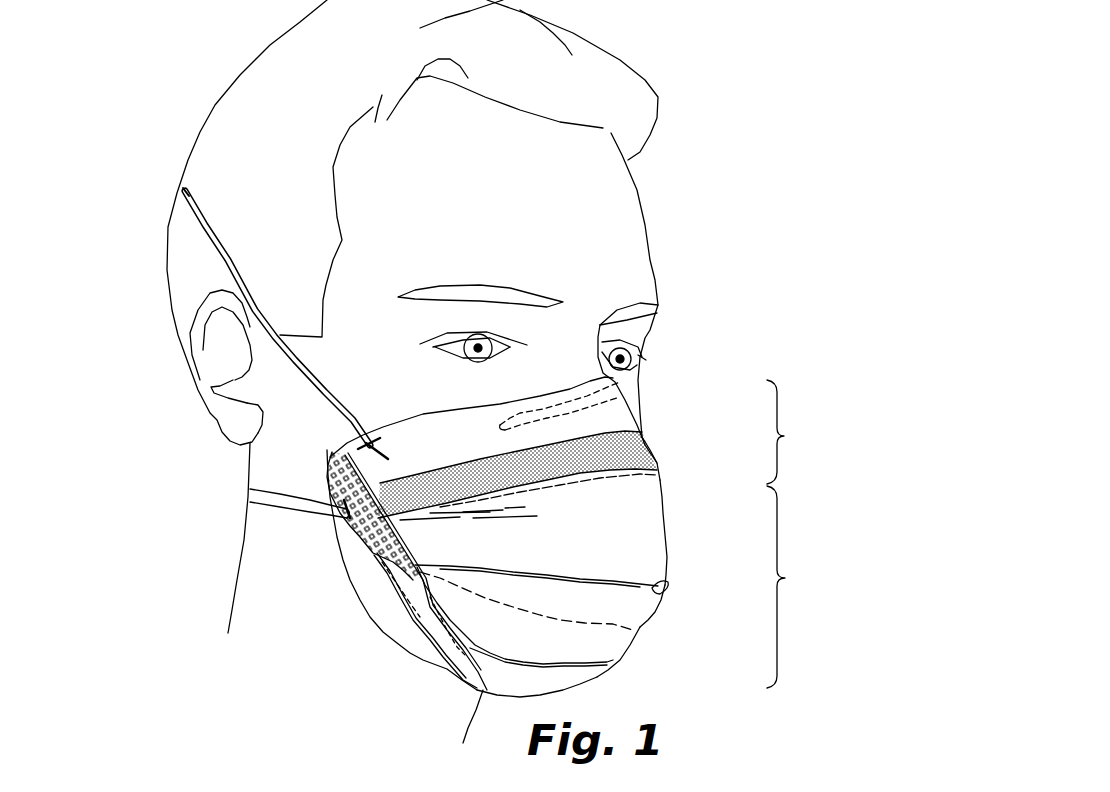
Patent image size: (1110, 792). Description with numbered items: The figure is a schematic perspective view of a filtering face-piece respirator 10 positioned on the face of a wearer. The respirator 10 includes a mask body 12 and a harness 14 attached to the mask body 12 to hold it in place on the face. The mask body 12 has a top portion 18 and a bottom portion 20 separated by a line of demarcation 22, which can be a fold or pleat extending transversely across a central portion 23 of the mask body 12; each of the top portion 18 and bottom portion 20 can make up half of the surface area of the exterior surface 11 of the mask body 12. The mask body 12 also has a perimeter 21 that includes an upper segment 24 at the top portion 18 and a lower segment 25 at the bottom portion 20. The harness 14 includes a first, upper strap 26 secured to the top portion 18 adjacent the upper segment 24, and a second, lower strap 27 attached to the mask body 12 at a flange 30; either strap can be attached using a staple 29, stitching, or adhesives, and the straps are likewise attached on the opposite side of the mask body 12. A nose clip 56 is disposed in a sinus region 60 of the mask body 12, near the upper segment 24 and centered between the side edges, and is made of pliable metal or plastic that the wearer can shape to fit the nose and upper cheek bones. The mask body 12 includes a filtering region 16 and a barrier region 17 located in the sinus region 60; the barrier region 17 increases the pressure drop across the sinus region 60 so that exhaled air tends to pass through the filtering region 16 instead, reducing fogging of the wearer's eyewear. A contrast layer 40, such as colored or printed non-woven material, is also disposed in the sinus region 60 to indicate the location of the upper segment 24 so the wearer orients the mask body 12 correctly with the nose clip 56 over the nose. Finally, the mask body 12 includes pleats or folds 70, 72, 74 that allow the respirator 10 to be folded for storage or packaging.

The respirator 10 is at (680, 432).
The exterior surface 11 is at (670, 643).
The mask body 12 is at (678, 504).
The harness 14 is at (190, 239).
The filtering region 16 is at (791, 587).
The barrier region 17 is at (791, 432).
The top portion 18 is at (630, 533).
The bottom portion 20 is at (530, 690).
The perimeter 21 is at (478, 692).
The line of demarcation 22 is at (665, 580).
The central portion 23 is at (695, 605).
The upper segment 24 is at (417, 412).
The lower segment 25 is at (367, 622).
The upper strap 26 is at (186, 198).
The lower strap 27 is at (250, 493).
The staple 29 is at (375, 440).
The flange 30 is at (345, 522).
The contrast layer 40 is at (615, 437).
The nose clip 56 is at (507, 420).
The sinus region 60 is at (687, 468).
The pleat 70 is at (548, 487).
The pleat 72 is at (550, 580).
The pleat 74 is at (443, 658).